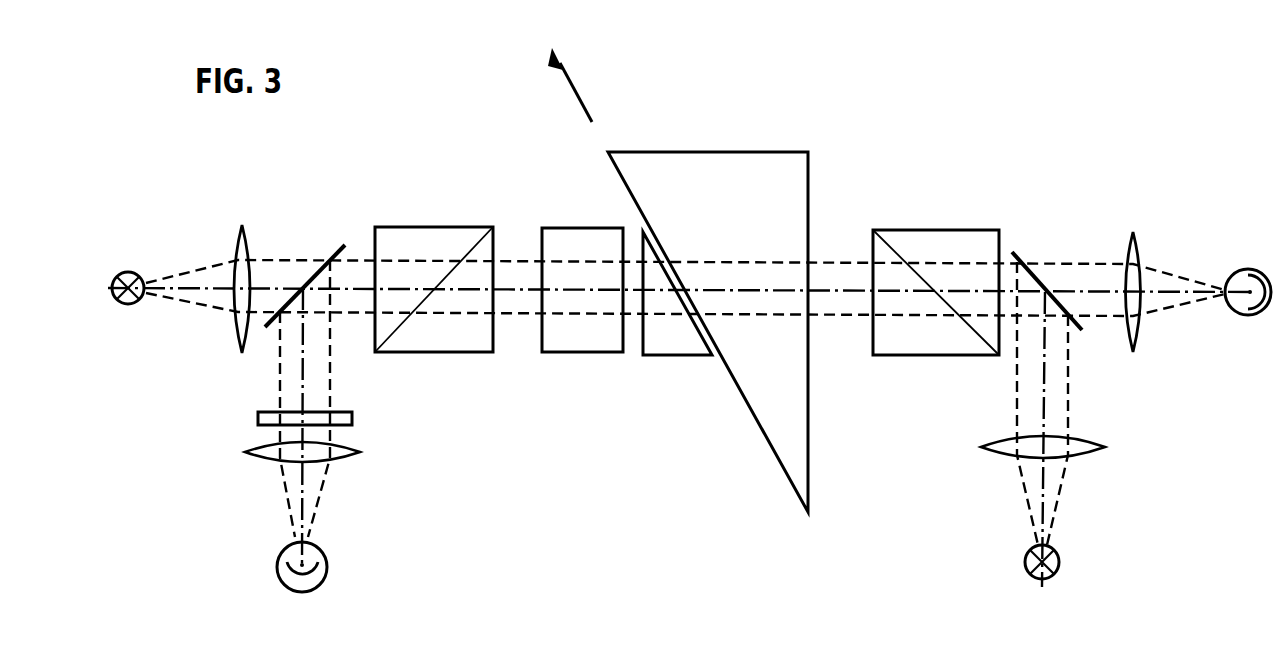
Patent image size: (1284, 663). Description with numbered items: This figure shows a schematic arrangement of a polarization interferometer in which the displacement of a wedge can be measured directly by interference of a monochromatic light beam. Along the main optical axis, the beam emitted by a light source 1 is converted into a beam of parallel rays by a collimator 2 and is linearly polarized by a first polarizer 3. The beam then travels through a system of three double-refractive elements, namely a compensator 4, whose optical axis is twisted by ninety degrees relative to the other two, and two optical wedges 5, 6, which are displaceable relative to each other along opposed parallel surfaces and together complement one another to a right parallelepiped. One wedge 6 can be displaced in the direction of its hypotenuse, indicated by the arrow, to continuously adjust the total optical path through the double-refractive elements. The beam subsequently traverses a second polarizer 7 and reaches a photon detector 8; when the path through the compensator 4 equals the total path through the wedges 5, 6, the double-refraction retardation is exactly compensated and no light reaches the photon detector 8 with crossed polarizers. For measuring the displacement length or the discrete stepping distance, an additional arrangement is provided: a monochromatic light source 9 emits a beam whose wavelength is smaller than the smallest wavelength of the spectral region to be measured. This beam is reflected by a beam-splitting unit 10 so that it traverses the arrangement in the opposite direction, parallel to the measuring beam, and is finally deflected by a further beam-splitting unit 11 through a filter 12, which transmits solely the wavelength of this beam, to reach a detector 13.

The light source 1 is at (128, 315).
The collimator 2 is at (240, 310).
The first polarizer 3 is at (434, 309).
The compensator 4 is at (582, 311).
The optical wedge 5 is at (677, 314).
The optical wedge 6 is at (708, 332).
The second polarizer 7 is at (936, 313).
The photon detector 8 is at (1248, 316).
The monochromatic light source 9 is at (1057, 553).
The beam-splitting unit 10 is at (1047, 254).
The beam-splitting unit 11 is at (305, 259).
The filter 12 is at (328, 420).
The detector 13 is at (337, 567).